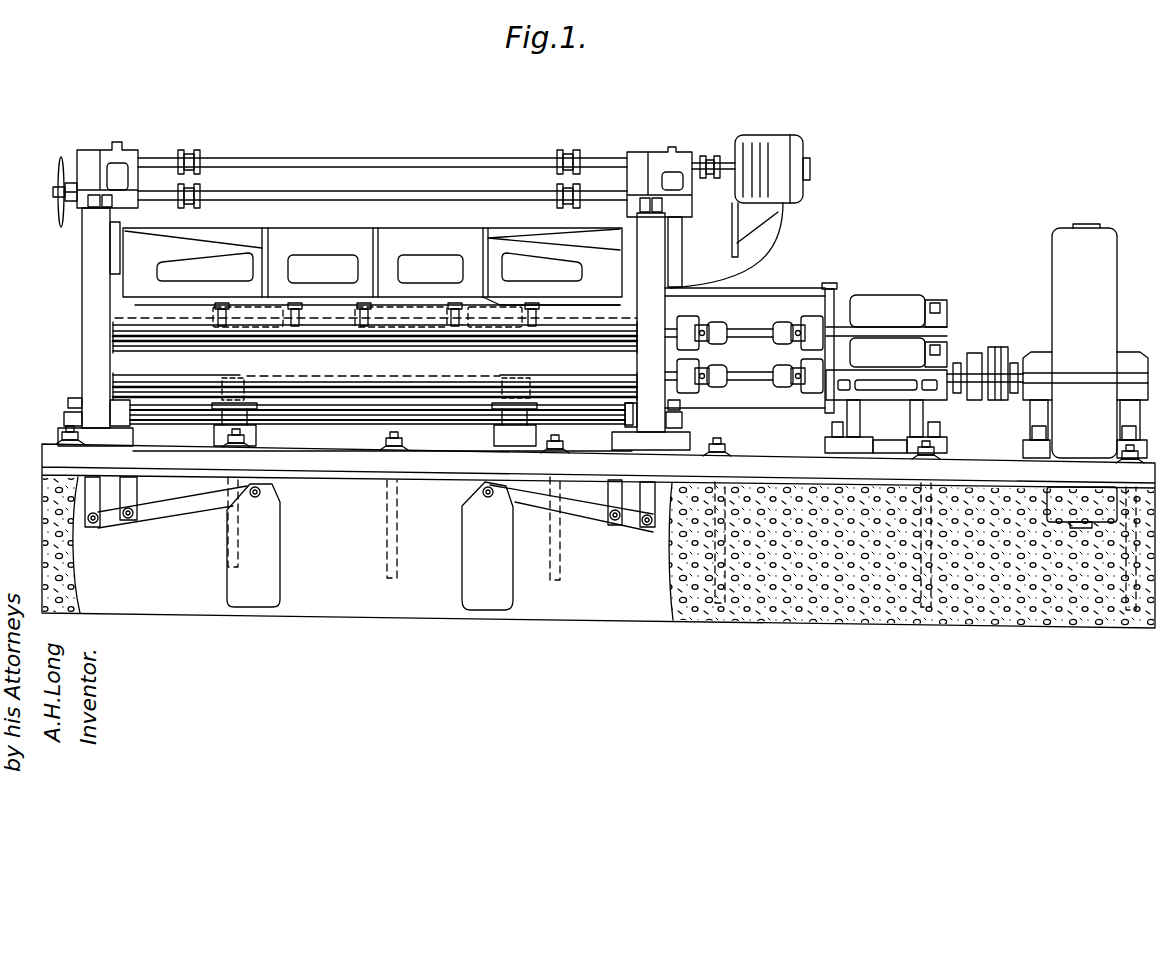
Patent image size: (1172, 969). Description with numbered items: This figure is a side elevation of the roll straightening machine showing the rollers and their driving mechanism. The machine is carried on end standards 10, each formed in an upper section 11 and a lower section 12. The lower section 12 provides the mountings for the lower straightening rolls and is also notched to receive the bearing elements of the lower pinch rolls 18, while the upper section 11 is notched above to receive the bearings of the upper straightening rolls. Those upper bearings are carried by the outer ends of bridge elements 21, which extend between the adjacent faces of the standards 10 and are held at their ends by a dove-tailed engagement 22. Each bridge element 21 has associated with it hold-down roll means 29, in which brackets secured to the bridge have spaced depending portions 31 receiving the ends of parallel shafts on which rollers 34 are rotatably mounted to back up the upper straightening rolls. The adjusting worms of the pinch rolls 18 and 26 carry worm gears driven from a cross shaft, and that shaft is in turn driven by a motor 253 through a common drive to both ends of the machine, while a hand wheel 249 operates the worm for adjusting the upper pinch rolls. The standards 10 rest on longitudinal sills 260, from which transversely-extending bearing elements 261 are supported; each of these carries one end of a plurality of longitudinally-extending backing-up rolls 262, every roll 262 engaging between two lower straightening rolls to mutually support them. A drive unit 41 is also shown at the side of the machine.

The end standard 10 is at (92, 322).
The upper section 11 is at (697, 253).
The lower section 12 is at (374, 403).
The lower pinch roll 18 is at (127, 370).
The bridge element 21 is at (380, 233).
The dove-tailed engagement 22 is at (116, 228).
The pinch roll 26 is at (112, 330).
The hold-down roll means 29 is at (483, 306).
The depending portion 31 is at (215, 310).
The roller 34 is at (232, 323).
The gear reducer 41 is at (838, 302).
The hand wheel 249 is at (57, 168).
The motor 253 is at (762, 142).
The longitudinal sill 260 is at (306, 468).
The bearing element 261 is at (222, 437).
The backing-up roll 262 is at (420, 398).